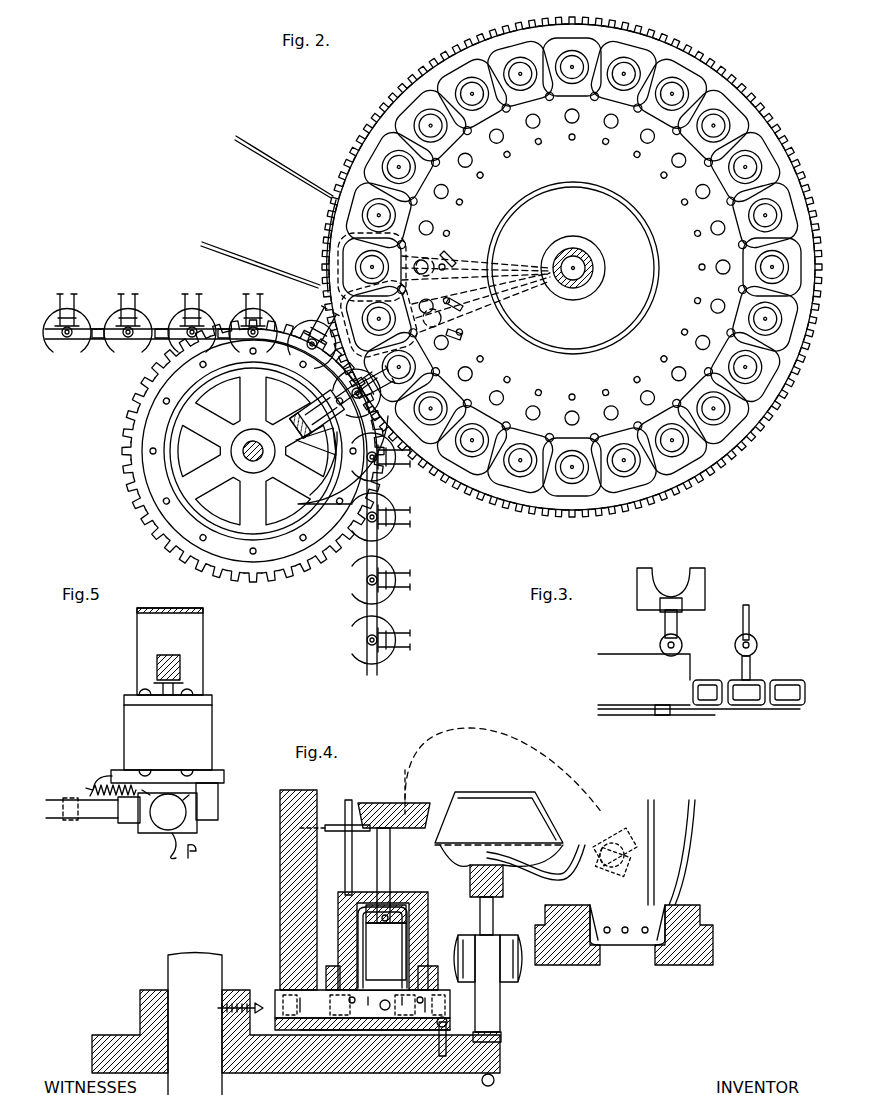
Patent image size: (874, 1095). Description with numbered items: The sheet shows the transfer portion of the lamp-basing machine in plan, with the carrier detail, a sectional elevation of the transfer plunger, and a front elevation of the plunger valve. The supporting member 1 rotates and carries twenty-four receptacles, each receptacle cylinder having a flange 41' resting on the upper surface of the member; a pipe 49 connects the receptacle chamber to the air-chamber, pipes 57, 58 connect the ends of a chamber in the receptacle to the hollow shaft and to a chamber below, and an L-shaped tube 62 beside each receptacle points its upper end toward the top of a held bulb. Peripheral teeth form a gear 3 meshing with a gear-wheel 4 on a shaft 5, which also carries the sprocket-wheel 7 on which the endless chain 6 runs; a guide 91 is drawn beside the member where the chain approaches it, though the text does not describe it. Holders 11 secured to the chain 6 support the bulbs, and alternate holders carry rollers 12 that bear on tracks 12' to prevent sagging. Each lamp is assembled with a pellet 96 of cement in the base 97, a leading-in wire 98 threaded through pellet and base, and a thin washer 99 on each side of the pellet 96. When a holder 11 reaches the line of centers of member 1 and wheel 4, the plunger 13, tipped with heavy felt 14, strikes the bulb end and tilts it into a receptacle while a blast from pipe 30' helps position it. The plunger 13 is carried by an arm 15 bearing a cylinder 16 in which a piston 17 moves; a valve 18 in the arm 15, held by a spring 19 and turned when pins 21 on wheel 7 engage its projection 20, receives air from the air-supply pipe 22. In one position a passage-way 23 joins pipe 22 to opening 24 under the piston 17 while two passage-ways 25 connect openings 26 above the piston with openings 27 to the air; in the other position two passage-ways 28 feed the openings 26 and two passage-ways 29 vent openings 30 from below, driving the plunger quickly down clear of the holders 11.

In FIG. 2, the supporting member 1 is at (572, 275).
In FIG. 2, the gear 3 is at (572, 278).
In FIG. 2, the gear-wheel 4 is at (253, 463).
In FIG. 2, the shaft 5 is at (253, 468).
In FIG. 2, the endless chain 6 is at (382, 552).
In FIG. 2, the sprocket-wheel 7 is at (253, 483).
In FIG. 4, the sprocket-wheel 7 is at (500, 1052).
In FIG. 2, the holder 11 is at (395, 533).
In FIG. 3, the holder 11 is at (700, 583).
In FIG. 4, the holder 11 is at (462, 795).
In FIG. 2, the roller 12 is at (222, 354).
In FIG. 4, the roller 12 is at (499, 973).
In FIG. 2, the track 12' is at (151, 333).
In FIG. 5, the plunger 13 is at (177, 693).
In FIG. 4, the plunger 13 is at (392, 862).
In FIG. 5, the felt 14 is at (172, 664).
In FIG. 4, the felt 14 is at (392, 802).
In FIG. 2, the arm 15 is at (292, 423).
In FIG. 5, the arm 15 is at (196, 625).
In FIG. 4, the arm 15 is at (290, 900).
In FIG. 4, the cylinder 16 is at (350, 935).
In FIG. 4, the piston 17 is at (385, 922).
In FIG. 5, the valve 18 is at (176, 815).
In FIG. 4, the valve 18 is at (448, 996).
In FIG. 5, the spring 19 is at (108, 798).
In FIG. 5, the projection 20 is at (170, 850).
In FIG. 4, the projection 20 is at (447, 1030).
In FIG. 2, the pin 21 is at (253, 453).
In FIG. 5, the pin 21 is at (198, 851).
In FIG. 4, the pin 21 is at (455, 1036).
In FIG. 2, the air-supply pipe 22 is at (338, 440).
In FIG. 5, the air-supply pipe 22 is at (52, 820).
In FIG. 4, the passage-way 23 is at (391, 1013).
In FIG. 4, the opening 24 is at (388, 967).
In FIG. 4, the passage-way 25 is at (377, 1007).
In FIG. 4, the opening 26 is at (358, 942).
In FIG. 4, the opening 27 is at (438, 966).
In FIG. 4, the passage-way 28 is at (396, 1009).
In FIG. 4, the passage-way 29 is at (396, 1011).
In FIG. 4, the opening 30 is at (375, 1027).
In FIG. 2, the pipe 30' is at (342, 460).
In FIG. 2, the flange 41' is at (744, 355).
In FIG. 2, the pipe 49 is at (452, 264).
In FIG. 2, the pipe 57 is at (568, 257).
In FIG. 2, the pipe 58 is at (573, 268).
In FIG. 2, the L-shaped tube 62 is at (458, 337).
In FIG. 2, the guide chute 91 is at (268, 214).
In FIG. 4, the pellet 96 is at (618, 845).
In FIG. 4, the base 97 is at (630, 846).
In FIG. 4, the leading-in wire 98 is at (618, 872).
In FIG. 4, the washer 99 is at (575, 855).